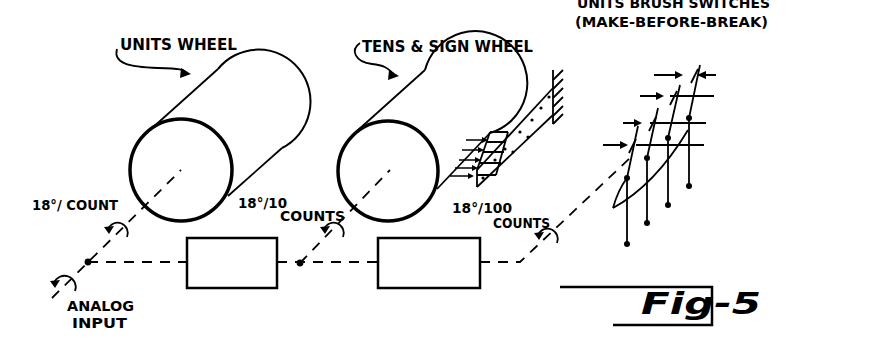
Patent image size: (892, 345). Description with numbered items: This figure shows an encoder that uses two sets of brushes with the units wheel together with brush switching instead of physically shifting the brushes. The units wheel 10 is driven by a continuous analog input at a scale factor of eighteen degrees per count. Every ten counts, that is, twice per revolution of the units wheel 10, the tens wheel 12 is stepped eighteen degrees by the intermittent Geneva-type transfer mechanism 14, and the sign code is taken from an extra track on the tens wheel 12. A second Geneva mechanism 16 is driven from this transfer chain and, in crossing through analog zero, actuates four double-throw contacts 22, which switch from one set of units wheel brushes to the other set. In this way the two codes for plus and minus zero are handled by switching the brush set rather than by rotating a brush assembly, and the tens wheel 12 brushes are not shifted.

The units wheel 10 is at (181, 100).
The tens wheel 12 is at (398, 95).
The Geneva-type transfer mechanism 14 is at (278, 280).
The Geneva mechanism 16 is at (480, 277).
The double-throw contacts 22 is at (668, 160).